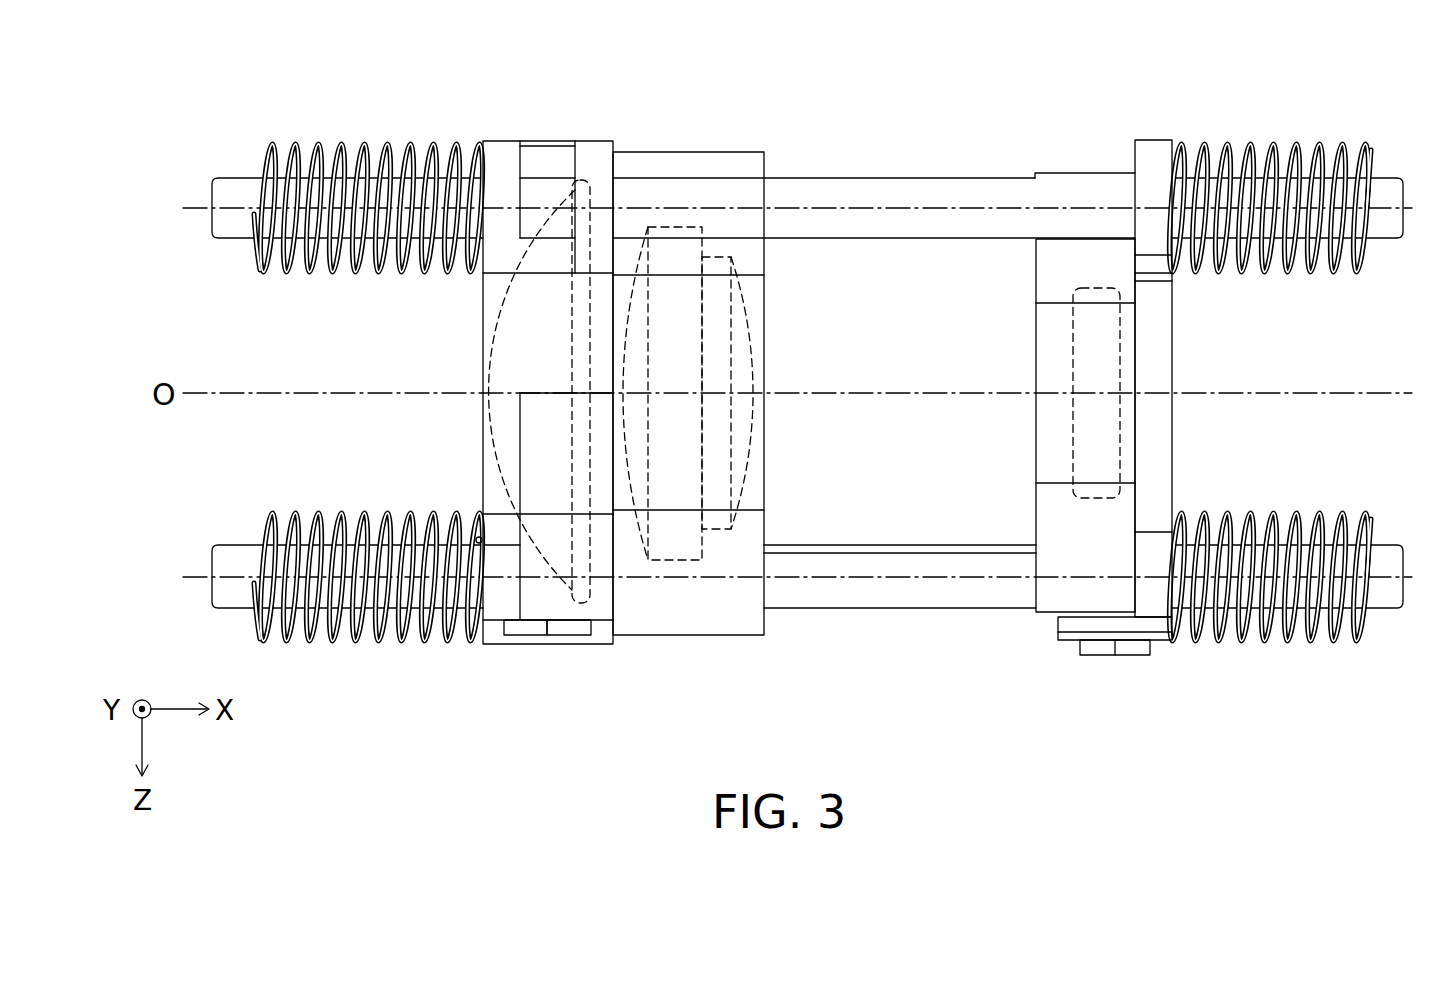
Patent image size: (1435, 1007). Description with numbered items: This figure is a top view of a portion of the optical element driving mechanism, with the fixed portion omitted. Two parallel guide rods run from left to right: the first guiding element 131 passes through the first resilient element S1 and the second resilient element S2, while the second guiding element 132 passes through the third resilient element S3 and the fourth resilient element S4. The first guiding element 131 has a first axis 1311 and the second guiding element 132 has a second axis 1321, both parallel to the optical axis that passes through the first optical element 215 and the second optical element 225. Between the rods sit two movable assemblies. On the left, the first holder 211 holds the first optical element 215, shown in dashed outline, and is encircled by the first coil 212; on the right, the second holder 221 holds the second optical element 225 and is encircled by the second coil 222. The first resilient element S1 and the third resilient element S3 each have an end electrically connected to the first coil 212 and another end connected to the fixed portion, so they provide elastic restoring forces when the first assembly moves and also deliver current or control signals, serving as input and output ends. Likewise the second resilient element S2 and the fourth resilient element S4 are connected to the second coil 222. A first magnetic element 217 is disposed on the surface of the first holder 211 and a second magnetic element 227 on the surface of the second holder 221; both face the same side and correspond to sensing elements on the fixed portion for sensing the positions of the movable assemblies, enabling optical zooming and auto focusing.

The first resilient element S1 is at (361, 142).
The second resilient element S2 is at (1266, 142).
The third resilient element S3 is at (383, 646).
The fourth resilient element S4 is at (1265, 646).
The first guiding element 131 is at (898, 186).
The second guiding element 132 is at (900, 609).
The first axis 1311 is at (214, 208).
The second axis 1321 is at (214, 577).
The first holder 211 is at (486, 302).
The first coil 212 is at (762, 292).
The first optical element 215 is at (510, 355).
The first magnetic element 217 is at (538, 638).
The second holder 221 is at (1163, 330).
The second coil 222 is at (1045, 461).
The second optical element 225 is at (1080, 425).
The second magnetic element 227 is at (1107, 657).